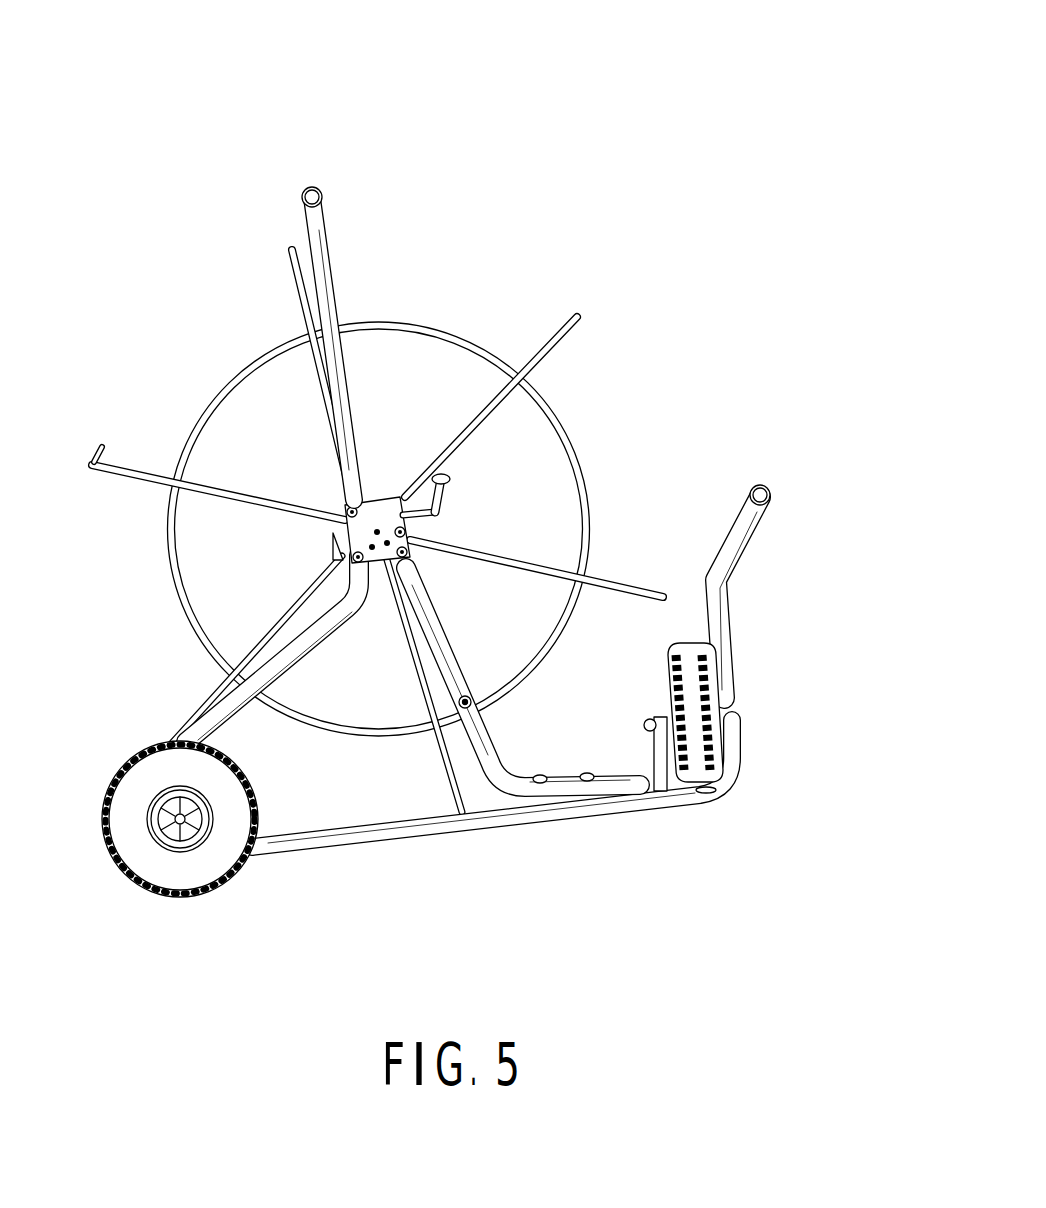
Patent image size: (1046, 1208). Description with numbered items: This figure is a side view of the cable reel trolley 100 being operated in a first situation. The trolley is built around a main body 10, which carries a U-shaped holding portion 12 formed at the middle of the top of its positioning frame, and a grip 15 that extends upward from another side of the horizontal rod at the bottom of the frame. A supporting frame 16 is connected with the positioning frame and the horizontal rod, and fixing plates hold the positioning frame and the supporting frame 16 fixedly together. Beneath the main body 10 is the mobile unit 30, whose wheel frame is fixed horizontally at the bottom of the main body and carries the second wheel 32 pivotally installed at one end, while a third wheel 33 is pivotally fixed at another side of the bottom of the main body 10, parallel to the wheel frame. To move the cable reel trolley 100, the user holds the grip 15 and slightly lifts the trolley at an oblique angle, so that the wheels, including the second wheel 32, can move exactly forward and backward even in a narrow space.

The cable reel trolley 100 is at (604, 158).
The main body 10 is at (340, 222).
The holding portion 12 is at (316, 188).
The grip 15 is at (760, 477).
The supporting frame 16 is at (486, 753).
The mobile unit 30 is at (123, 752).
The second wheel 32 is at (162, 870).
The third wheel 33 is at (688, 673).